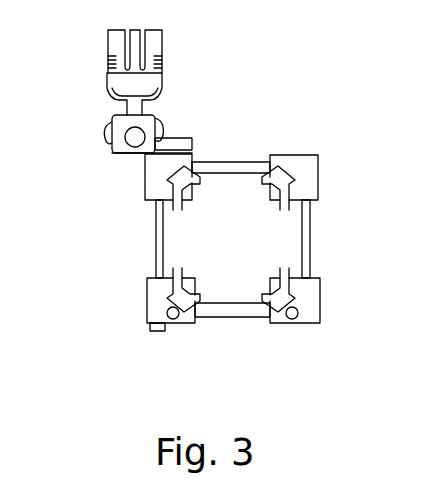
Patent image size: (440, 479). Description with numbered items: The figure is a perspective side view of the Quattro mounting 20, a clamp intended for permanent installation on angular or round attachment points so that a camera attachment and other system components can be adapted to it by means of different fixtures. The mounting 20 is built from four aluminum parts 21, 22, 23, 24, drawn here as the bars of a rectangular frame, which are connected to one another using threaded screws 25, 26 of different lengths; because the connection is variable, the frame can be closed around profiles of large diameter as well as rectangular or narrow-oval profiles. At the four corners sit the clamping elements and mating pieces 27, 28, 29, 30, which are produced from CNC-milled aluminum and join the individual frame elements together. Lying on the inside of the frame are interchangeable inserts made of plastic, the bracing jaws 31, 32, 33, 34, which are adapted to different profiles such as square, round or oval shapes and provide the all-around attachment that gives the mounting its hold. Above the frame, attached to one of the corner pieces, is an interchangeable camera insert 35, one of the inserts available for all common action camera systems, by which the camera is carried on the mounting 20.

The Quattro mounting 20 is at (222, 100).
The aluminum part 21 is at (243, 164).
The aluminum part 22 is at (305, 238).
The aluminum part 23 is at (235, 318).
The aluminum part 24 is at (156, 244).
The threaded screw 25 is at (301, 324).
The threaded screw 26 is at (154, 332).
The clamping element 27 is at (146, 195).
The clamping element 28 is at (145, 321).
The mating piece 29 is at (319, 196).
The mating piece 30 is at (320, 320).
The bracing jaw 31 is at (180, 187).
The bracing jaw 32 is at (272, 188).
The bracing jaw 33 is at (181, 290).
The bracing jaw 34 is at (275, 290).
The camera insert 35 is at (108, 33).